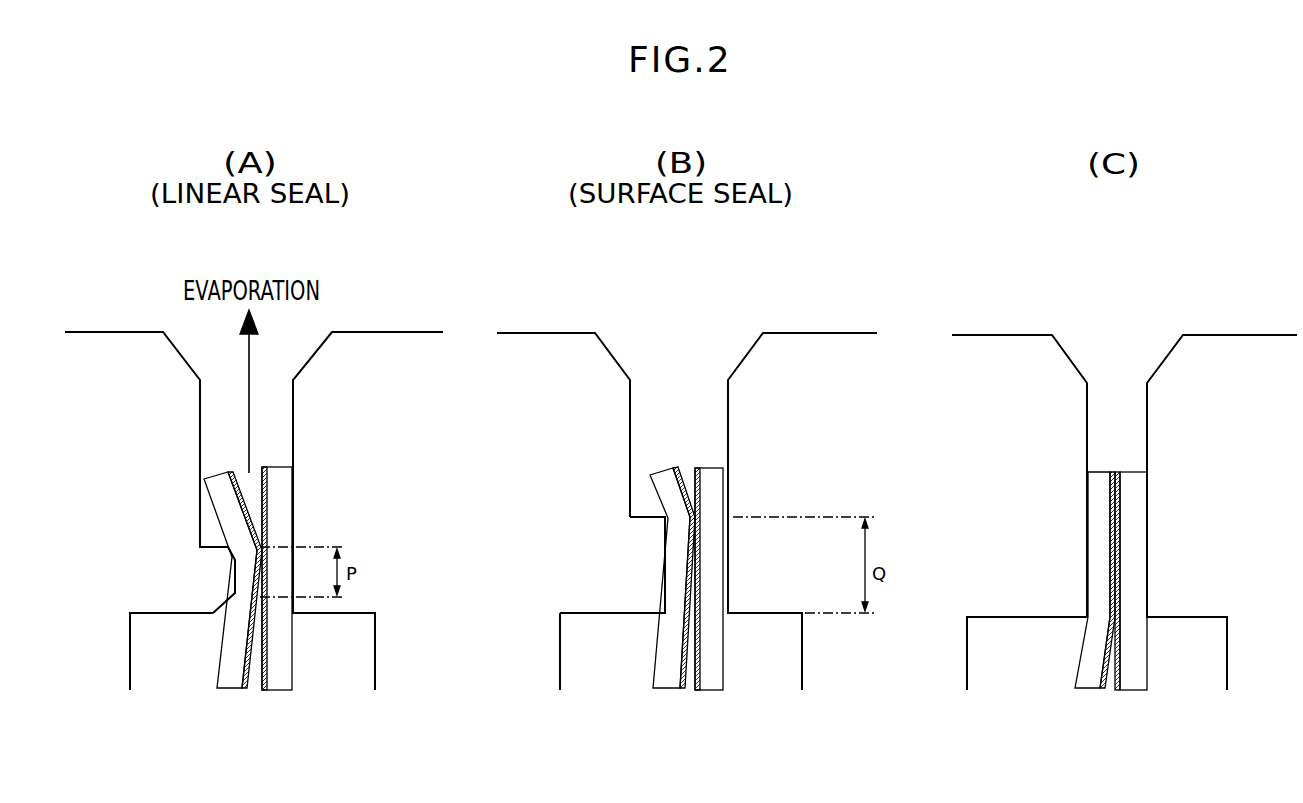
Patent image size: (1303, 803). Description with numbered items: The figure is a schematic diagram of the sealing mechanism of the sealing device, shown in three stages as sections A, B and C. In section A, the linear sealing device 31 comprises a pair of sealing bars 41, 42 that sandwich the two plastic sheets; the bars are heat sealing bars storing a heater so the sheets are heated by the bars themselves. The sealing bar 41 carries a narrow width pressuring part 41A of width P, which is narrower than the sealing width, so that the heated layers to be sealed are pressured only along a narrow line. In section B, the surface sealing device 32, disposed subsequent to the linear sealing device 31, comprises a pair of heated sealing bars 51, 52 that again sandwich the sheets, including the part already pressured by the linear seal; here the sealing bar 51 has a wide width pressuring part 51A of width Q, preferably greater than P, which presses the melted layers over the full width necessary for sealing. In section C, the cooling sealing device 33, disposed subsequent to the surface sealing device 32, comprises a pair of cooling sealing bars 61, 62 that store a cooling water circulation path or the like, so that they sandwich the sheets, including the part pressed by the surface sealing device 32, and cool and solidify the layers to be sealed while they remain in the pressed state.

The linear sealing device 31 is at (254, 459).
The surface sealing device 32 is at (687, 460).
The cooling sealing device 33 is at (1124, 461).
The sealing bar 41 is at (200, 432).
The narrow width pressuring part 41A is at (223, 577).
The sealing bar 42 is at (293, 419).
The sealing bar 51 is at (630, 432).
The wide width pressuring part 51A is at (645, 565).
The sealing bar 52 is at (728, 419).
The cooling sealing bar 61 is at (1088, 437).
The cooling sealing bar 62 is at (1147, 420).